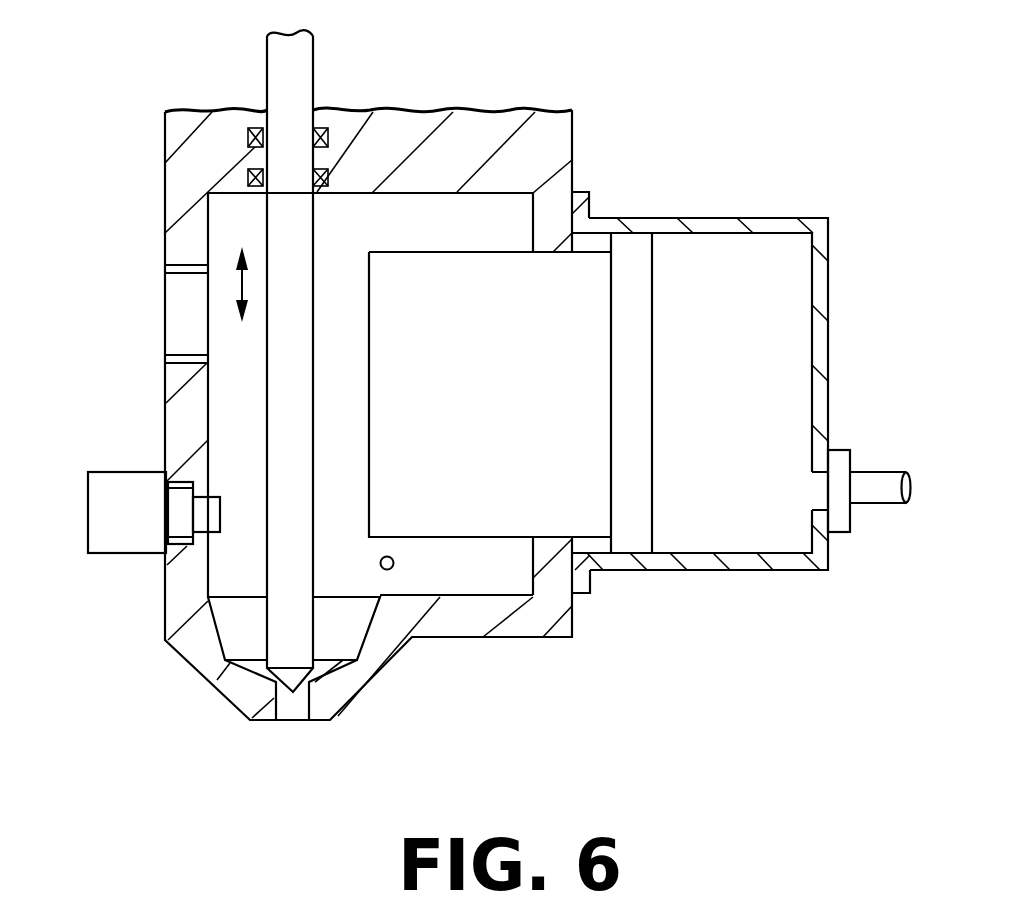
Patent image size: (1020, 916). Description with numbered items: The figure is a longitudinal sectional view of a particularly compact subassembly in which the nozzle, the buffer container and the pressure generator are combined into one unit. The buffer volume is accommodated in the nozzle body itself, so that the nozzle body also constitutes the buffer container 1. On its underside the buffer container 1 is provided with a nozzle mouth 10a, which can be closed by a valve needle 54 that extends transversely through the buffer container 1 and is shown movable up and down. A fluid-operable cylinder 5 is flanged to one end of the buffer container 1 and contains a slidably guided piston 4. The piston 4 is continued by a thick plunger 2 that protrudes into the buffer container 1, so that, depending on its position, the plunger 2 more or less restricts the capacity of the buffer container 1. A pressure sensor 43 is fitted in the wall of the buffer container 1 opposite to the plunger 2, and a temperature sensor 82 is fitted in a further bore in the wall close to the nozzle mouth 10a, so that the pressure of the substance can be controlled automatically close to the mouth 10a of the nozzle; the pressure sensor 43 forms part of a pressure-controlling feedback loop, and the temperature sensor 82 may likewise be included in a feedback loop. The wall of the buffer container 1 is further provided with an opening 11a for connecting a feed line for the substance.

The buffer container 1 is at (495, 133).
The plunger 2 is at (475, 527).
The piston 4 is at (632, 538).
The fluid-operable cylinder 5 is at (757, 570).
The nozzle mouth 10a is at (287, 723).
The opening 11a is at (182, 327).
The pressure sensor 43 is at (117, 530).
The valve needle 54 is at (288, 438).
The temperature sensor 82 is at (390, 570).